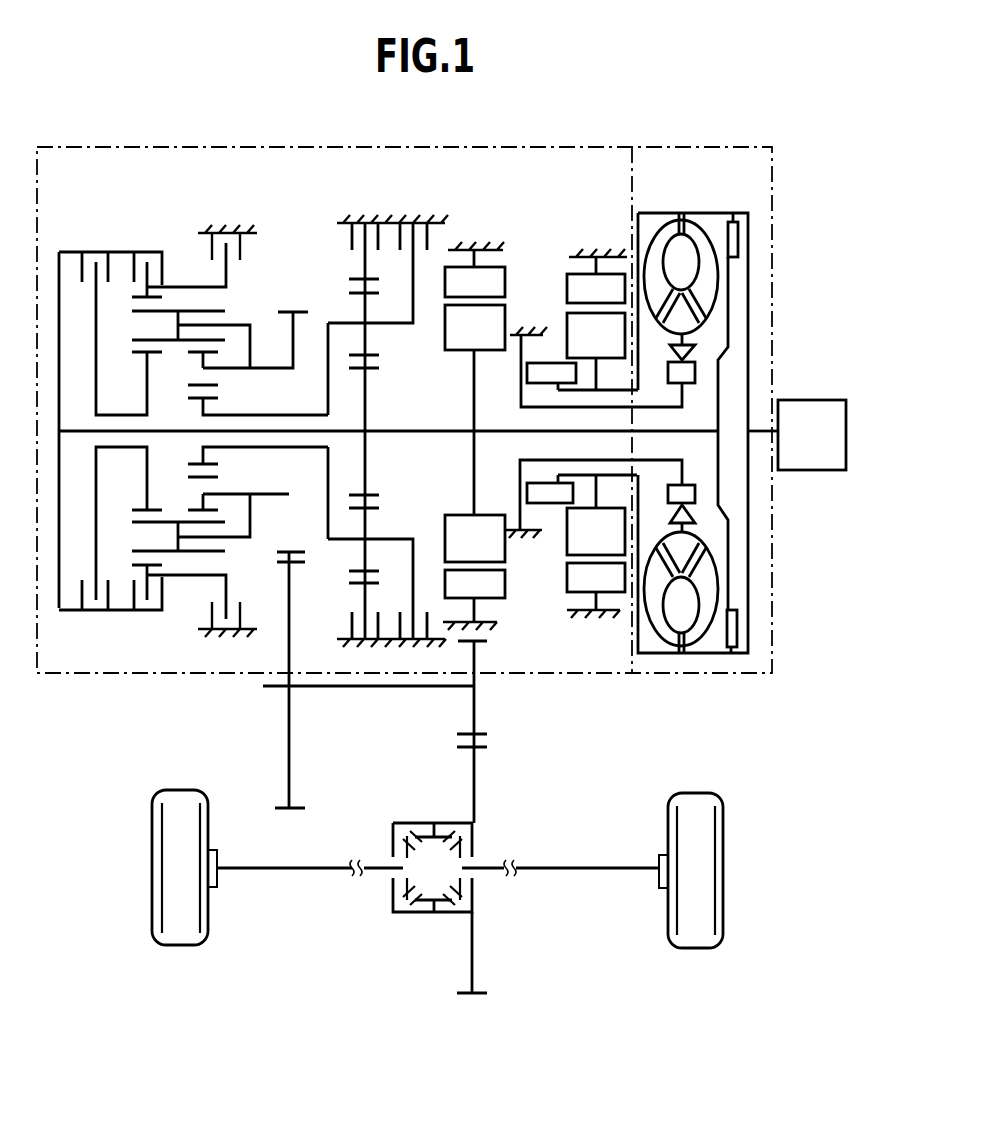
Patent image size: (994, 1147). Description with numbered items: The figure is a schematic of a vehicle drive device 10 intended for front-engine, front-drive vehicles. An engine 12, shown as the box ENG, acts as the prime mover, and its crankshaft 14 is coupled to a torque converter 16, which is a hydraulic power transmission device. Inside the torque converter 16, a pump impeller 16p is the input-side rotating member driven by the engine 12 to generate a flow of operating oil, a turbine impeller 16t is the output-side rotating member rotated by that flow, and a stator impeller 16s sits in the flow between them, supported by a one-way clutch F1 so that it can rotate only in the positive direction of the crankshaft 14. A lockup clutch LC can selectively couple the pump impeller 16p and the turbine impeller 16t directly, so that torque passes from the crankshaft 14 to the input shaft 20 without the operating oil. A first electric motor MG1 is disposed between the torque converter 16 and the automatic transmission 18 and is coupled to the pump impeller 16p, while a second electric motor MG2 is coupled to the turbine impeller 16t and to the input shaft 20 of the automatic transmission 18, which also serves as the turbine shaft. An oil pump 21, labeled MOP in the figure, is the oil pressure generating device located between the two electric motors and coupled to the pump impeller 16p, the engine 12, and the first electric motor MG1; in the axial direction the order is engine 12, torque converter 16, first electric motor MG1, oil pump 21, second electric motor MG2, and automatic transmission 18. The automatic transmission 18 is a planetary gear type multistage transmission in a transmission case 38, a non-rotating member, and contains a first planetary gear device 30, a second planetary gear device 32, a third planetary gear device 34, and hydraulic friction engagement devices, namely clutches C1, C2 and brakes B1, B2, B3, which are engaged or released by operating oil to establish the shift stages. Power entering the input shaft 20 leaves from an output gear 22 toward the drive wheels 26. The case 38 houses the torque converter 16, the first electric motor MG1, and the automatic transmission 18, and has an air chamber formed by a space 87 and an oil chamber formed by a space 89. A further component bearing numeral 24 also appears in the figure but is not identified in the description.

The vehicle drive device 10 is at (762, 128).
The engine 12 is at (812, 419).
The crankshaft 14 is at (764, 431).
The torque converter 16 is at (701, 405).
The pump impeller 16p is at (660, 244).
The turbine impeller 16t is at (705, 257).
The stator impeller 16s is at (692, 326).
The automatic transmission 18 is at (193, 401).
The input shaft 20 is at (457, 430).
The oil pump 21 is at (537, 497).
The output gear 22 is at (284, 550).
The differential gear device 24 is at (438, 867).
The drive wheels 26 is at (180, 797).
The first planetary gear device 30 is at (399, 459).
The second planetary gear device 32 is at (258, 456).
The third planetary gear device 34 is at (139, 482).
The transmission case 38 is at (243, 226).
The space 87 is at (681, 156).
The space 89 is at (372, 162).
The clutch C1 is at (97, 245).
The clutch C2 is at (144, 245).
The brake B1 is at (444, 242).
The brake B2 is at (257, 253).
The brake B3 is at (339, 242).
The first electric motor MG1 is at (530, 612).
The second electric motor MG2 is at (441, 331).
The mechanical oil pump MOP is at (601, 371).
The lockup clutch LC is at (738, 237).
The one-way clutch F1 is at (670, 433).
The engine ENG is at (811, 436).